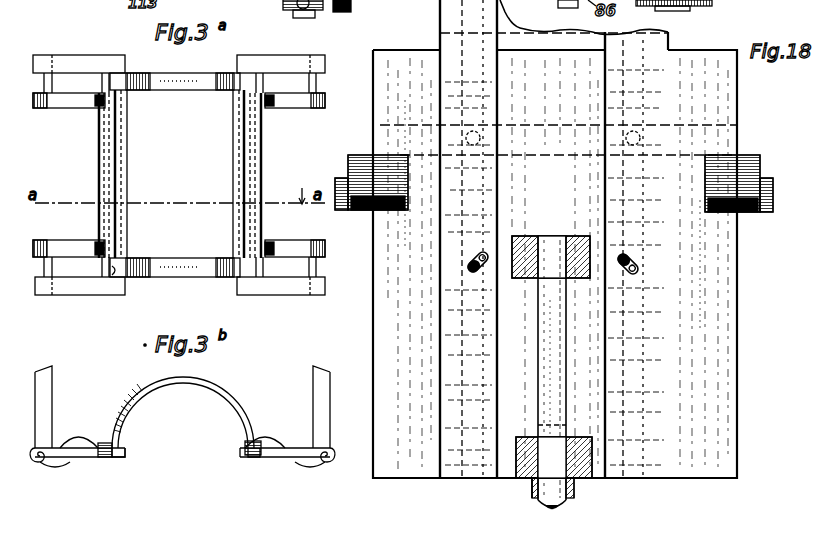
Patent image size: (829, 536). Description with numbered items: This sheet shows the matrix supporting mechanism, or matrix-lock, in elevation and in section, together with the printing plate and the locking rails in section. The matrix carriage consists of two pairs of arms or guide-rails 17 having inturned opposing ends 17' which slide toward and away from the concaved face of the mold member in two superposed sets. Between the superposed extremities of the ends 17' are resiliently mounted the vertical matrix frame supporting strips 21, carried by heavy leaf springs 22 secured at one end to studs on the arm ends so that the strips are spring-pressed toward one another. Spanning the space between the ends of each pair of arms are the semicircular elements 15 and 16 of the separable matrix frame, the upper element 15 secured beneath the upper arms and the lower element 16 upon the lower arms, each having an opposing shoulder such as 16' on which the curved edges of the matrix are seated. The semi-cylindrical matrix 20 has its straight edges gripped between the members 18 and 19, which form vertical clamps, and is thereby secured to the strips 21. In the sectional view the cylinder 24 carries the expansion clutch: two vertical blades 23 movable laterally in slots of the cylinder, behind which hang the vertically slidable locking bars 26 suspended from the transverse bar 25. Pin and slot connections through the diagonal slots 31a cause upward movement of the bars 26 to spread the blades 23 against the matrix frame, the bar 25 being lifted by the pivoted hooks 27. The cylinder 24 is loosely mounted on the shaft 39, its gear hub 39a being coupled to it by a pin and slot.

In FIG. 3A, the upper semicircular element 15 is at (112, 82).
In FIG. 3A, the lower semicircular element 16 is at (175, 284).
In FIG. 3B, the lower semicircular element 16 is at (186, 417).
In FIG. 3A, the shoulder of lower element 16' is at (133, 287).
In FIG. 3A, the guide-rails 17 is at (191, 175).
In FIG. 3B, the guide-rails 17 is at (182, 411).
In FIG. 3A, the inturned ends of guide-rails 17' is at (180, 175).
In FIG. 3B, the inturned ends of guide-rails 17' is at (174, 431).
In FIG. 3A, the clamp members 18 is at (100, 185).
In FIG. 3B, the clamp members 18 is at (104, 440).
In FIG. 3A, the clamp members 19 is at (117, 180).
In FIG. 3B, the clamp members 19 is at (112, 458).
In FIG. 3A, the matrix 20 is at (180, 174).
In FIG. 3B, the matrix 20 is at (232, 390).
In FIG. 3A, the matrix frame supporting strips 21 is at (100, 170).
In FIG. 3B, the matrix frame supporting strips 21 is at (102, 460).
In FIG. 3A, the leaf springs 22 is at (74, 103).
In FIG. 3B, the leaf springs 22 is at (62, 455).
In FIG. 18, the blades 23 is at (615, 92).
In FIG. 18, the cylinder 24 is at (447, 16).
In FIG. 18, the transverse bar 25 is at (526, 150).
In FIG. 18, the locking bars 26 is at (493, 103).
In FIG. 18, the hooks 27 is at (718, 214).
In FIG. 18, the diagonal slots 31a is at (748, 282).
In FIG. 18, the shaft 39 is at (550, 236).
In FIG. 18, the hub 39a is at (530, 485).